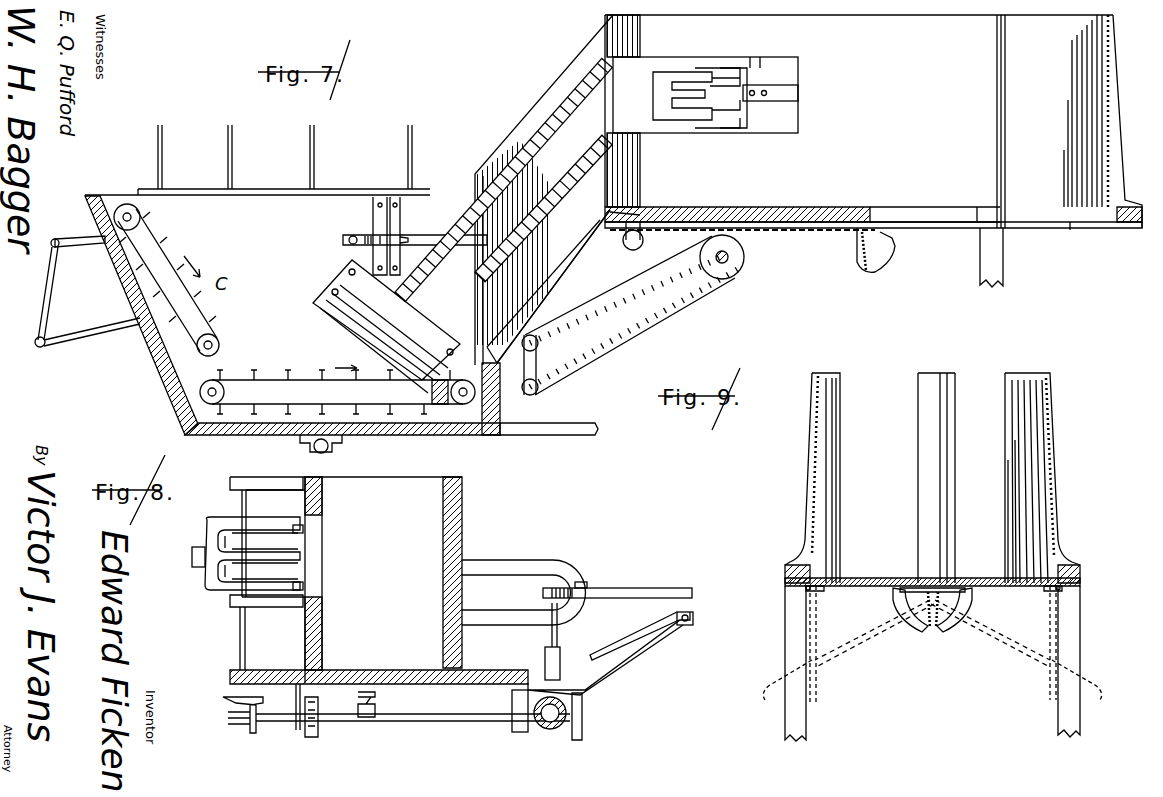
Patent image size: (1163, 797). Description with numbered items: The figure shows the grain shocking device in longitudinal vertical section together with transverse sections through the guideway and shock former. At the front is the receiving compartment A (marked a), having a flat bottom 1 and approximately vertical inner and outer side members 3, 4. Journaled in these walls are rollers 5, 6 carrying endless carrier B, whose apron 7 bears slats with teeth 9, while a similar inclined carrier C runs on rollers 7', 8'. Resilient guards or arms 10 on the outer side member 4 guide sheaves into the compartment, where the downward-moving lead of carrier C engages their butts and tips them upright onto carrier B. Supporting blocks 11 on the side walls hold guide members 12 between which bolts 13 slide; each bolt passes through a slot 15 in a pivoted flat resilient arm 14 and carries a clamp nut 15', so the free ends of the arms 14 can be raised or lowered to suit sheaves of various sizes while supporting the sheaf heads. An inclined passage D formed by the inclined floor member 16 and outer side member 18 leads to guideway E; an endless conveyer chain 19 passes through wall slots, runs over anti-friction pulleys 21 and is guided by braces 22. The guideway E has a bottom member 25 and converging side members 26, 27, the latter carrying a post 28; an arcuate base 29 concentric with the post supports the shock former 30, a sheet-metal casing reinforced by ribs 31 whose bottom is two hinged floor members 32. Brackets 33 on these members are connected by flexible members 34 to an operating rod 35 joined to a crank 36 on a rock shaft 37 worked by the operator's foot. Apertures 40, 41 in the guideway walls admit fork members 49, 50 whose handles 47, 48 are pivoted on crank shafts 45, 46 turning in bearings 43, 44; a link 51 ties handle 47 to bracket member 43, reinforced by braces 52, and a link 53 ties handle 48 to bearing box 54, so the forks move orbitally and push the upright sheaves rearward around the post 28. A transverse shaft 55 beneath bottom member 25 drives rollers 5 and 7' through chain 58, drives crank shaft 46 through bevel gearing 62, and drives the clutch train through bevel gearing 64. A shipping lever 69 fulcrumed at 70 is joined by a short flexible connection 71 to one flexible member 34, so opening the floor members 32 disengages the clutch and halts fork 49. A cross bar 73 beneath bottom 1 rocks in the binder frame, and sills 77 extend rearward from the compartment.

In FIG. 7, the flat bottom 1 is at (420, 436).
In FIG. 7, the inner side member 3 is at (330, 372).
In FIG. 7, the outer side member 4 is at (248, 210).
In FIG. 7, the roller 5 is at (486, 437).
In FIG. 7, the roller 6 is at (200, 395).
In FIG. 7, the apron 7 is at (233, 437).
In FIG. 7, the roller 7' is at (225, 344).
In FIG. 7, the roller 8' is at (125, 197).
In FIG. 7, the teeth 9 is at (290, 370).
In FIG. 7, the guards or arms 10 is at (164, 136).
In FIG. 7, the supporting blocks 11 is at (408, 200).
In FIG. 7, the guide members 12 is at (378, 200).
In FIG. 7, the bolts 13 is at (378, 248).
In FIG. 7, the arm 14 is at (440, 230).
In FIG. 7, the slot 15 is at (415, 210).
In FIG. 7, the clamp nut 15' is at (351, 194).
In FIG. 7, the inclined floor member 16 is at (575, 250).
In FIG. 7, the outer side member 18 is at (557, 88).
In FIG. 7, the endless conveyer chain 19 is at (530, 140).
In FIG. 7, the anti-friction pulleys 21 is at (488, 172).
In FIG. 7, the braces 22 is at (600, 102).
In FIG. 7, the bottom member 25 is at (780, 207).
In FIG. 8, the bottom member 25 is at (385, 670).
In FIG. 8, the inner side member 26 is at (464, 518).
In FIG. 7, the outer side member 27 is at (859, 111).
In FIG. 8, the outer side member 27 is at (324, 612).
In FIG. 7, the post 28 is at (1008, 165).
In FIG. 9, the post 28 is at (930, 448).
In FIG. 7, the arcuate base 29 is at (1132, 228).
In FIG. 9, the arcuate base 29 is at (1083, 573).
In FIG. 7, the shock former 30 is at (1118, 50).
In FIG. 9, the shock former 30 is at (1040, 445).
In FIG. 7, the external ribs or braces 31 is at (1118, 118).
In FIG. 9, the external ribs or braces 31 is at (800, 462).
In FIG. 7, the floor members 32 is at (1070, 232).
In FIG. 9, the floor members 32 is at (872, 578).
In FIG. 7, the bracket 33 is at (893, 255).
In FIG. 9, the bracket 33 is at (918, 632).
In FIG. 7, the flexible members 34 is at (858, 262).
In FIG. 9, the flexible members 34 is at (933, 632).
In FIG. 7, the operating rod 35 is at (96, 332).
In FIG. 7, the crank 36 is at (50, 286).
In FIG. 7, the rock shaft 37 is at (56, 238).
In FIG. 8, the aperture 40 is at (192, 563).
In FIG. 7, the aperture 41 is at (790, 66).
In FIG. 8, the aperture 41 is at (314, 565).
In FIG. 8, the bearing 43 is at (612, 672).
In FIG. 8, the bearing 44 is at (285, 608).
In FIG. 8, the crank shaft 45 is at (560, 628).
In FIG. 7, the crank shaft 46 is at (755, 60).
In FIG. 8, the crank shaft 46 is at (238, 640).
In FIG. 8, the handle 47 is at (628, 585).
In FIG. 7, the handle 48 is at (790, 96).
In FIG. 8, the fork member 49 is at (540, 565).
In FIG. 7, the fork member 50 is at (655, 100).
In FIG. 8, the fork member 50 is at (212, 592).
In FIG. 8, the link 51 is at (693, 605).
In FIG. 8, the braces 52 is at (670, 640).
In FIG. 8, the link 53 is at (292, 527).
In FIG. 8, the box or bearing 54 is at (303, 530).
In FIG. 7, the shaft 55 is at (732, 270).
In FIG. 8, the shaft 55 is at (418, 725).
In FIG. 7, the chain or link belt 58 is at (630, 333).
In FIG. 8, the bevel gearing 62 is at (250, 722).
In FIG. 8, the bevel gearing 64 is at (552, 732).
In FIG. 8, the shipping lever 69 is at (395, 712).
In FIG. 7, the fulcrum 70 is at (1005, 268).
In FIG. 8, the fulcrum 70 is at (465, 718).
In FIG. 9, the fulcrum 70 is at (790, 626).
In FIG. 8, the short flexible connection 71 is at (360, 718).
In FIG. 7, the cross bar 73 is at (330, 449).
In FIG. 7, the frame members or sills 77 is at (567, 430).
In FIG. 7, the hopper wall portion a is at (165, 360).